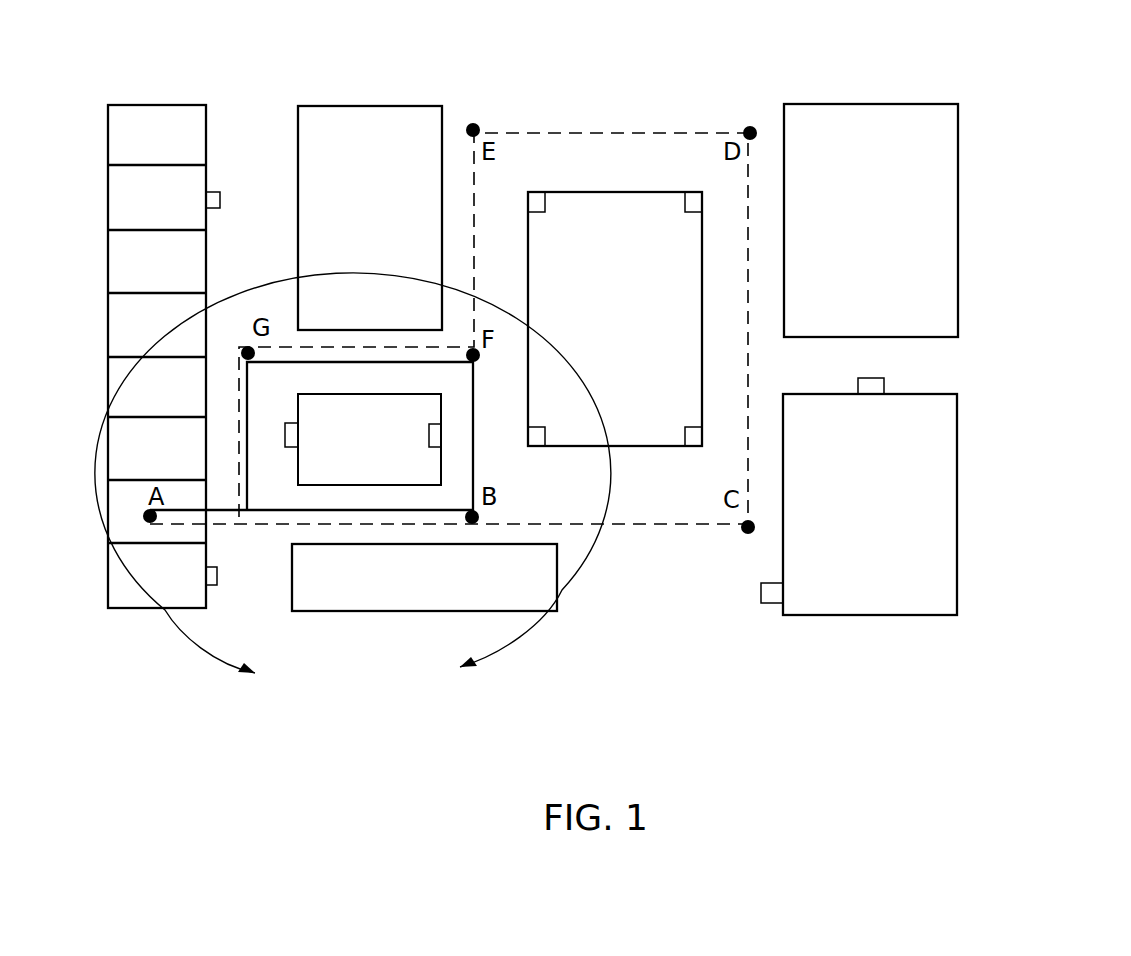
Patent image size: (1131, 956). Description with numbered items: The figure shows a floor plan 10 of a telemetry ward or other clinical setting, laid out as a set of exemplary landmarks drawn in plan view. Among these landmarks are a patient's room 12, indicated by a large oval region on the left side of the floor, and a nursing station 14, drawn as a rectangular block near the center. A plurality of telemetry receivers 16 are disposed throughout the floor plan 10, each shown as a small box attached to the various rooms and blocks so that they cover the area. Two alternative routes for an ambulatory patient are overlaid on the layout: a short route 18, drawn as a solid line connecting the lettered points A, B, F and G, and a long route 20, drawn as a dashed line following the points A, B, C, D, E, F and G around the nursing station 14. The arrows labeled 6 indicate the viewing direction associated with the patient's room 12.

The floor plan 10 is at (1040, 80).
The patient's room 12 is at (118, 515).
The nursing station 14 is at (648, 405).
The telemetry receiver 16 is at (215, 203).
The short route 18 is at (273, 512).
The long route 20 is at (660, 530).
The view direction 6 is at (358, 678).